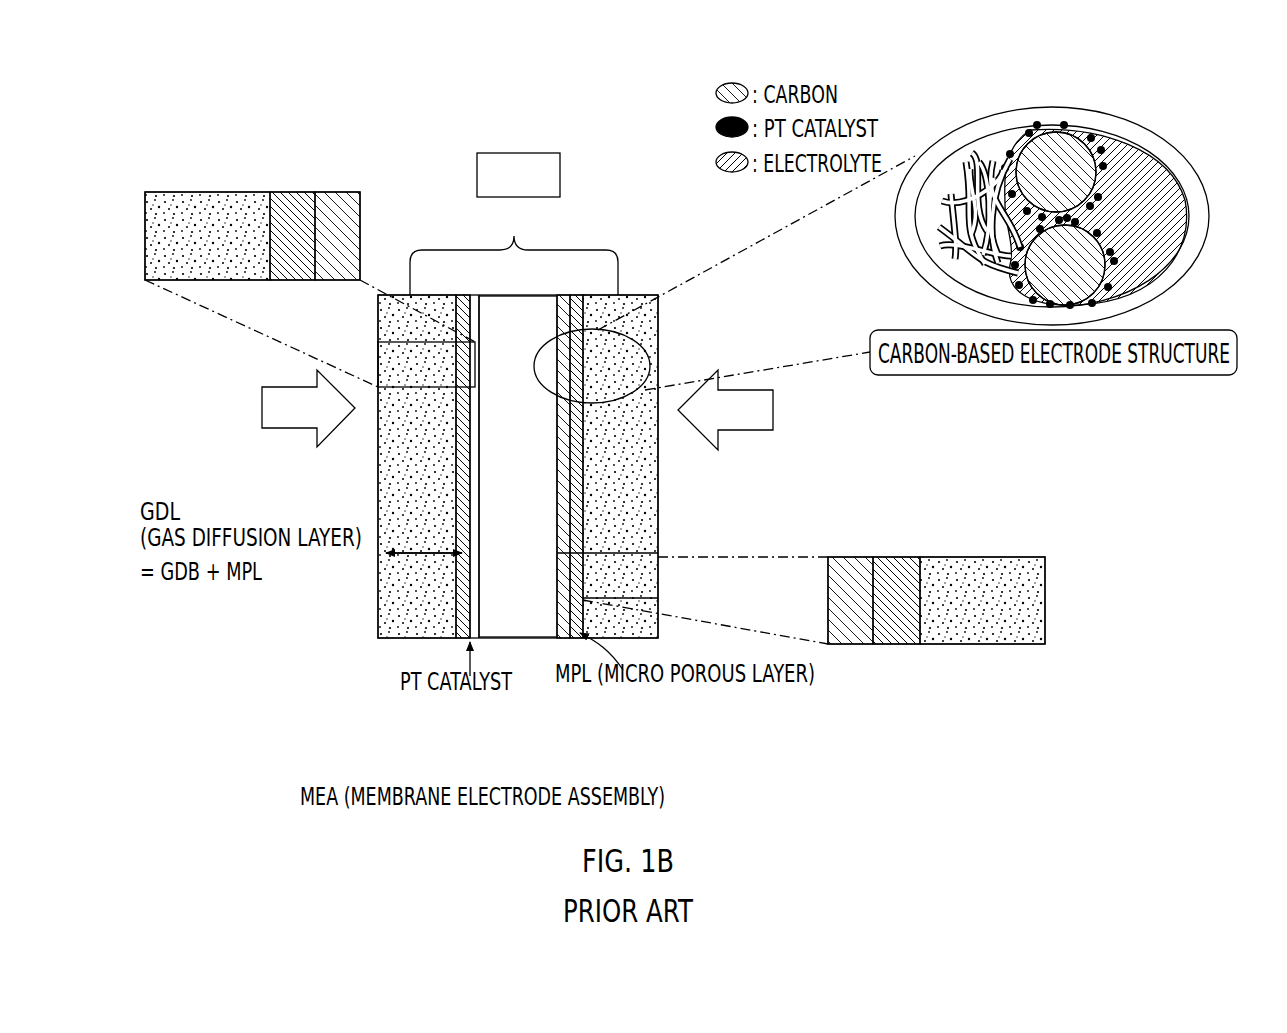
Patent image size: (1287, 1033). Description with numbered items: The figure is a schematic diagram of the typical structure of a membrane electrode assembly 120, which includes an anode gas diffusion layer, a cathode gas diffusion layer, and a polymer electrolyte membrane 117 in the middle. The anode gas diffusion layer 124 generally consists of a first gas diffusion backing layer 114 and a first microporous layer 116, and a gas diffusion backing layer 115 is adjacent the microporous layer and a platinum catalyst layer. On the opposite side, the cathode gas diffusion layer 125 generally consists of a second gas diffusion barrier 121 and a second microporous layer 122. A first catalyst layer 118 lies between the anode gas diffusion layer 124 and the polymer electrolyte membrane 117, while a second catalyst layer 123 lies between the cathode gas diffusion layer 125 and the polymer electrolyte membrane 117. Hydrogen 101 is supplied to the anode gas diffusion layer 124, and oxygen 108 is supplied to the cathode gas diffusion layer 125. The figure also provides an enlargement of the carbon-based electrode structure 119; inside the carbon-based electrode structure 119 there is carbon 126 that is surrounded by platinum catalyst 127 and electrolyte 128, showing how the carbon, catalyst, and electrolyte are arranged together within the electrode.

The hydrogen 101 is at (258, 402).
The oxygen 108 is at (773, 404).
The first gas diffusion backing layer 114 is at (188, 190).
The gas diffusion backing layer 115 is at (386, 634).
The first microporous layer 116 is at (297, 190).
The polymer electrolyte membrane 117 is at (523, 642).
The first catalyst layer 118 is at (345, 190).
The carbon-based electrode structure 119 is at (1052, 72).
The membrane electrode assembly 120 is at (563, 96).
The second gas diffusion barrier 121 is at (1050, 597).
The second microporous layer 122 is at (901, 650).
The second catalyst layer 123 is at (850, 650).
The anode gas diffusion layer 124 is at (318, 65).
The cathode gas diffusion layer 125 is at (873, 535).
The carbon 126 is at (1003, 125).
The platinum catalyst 127 is at (1135, 160).
The electrolyte 128 is at (1160, 256).